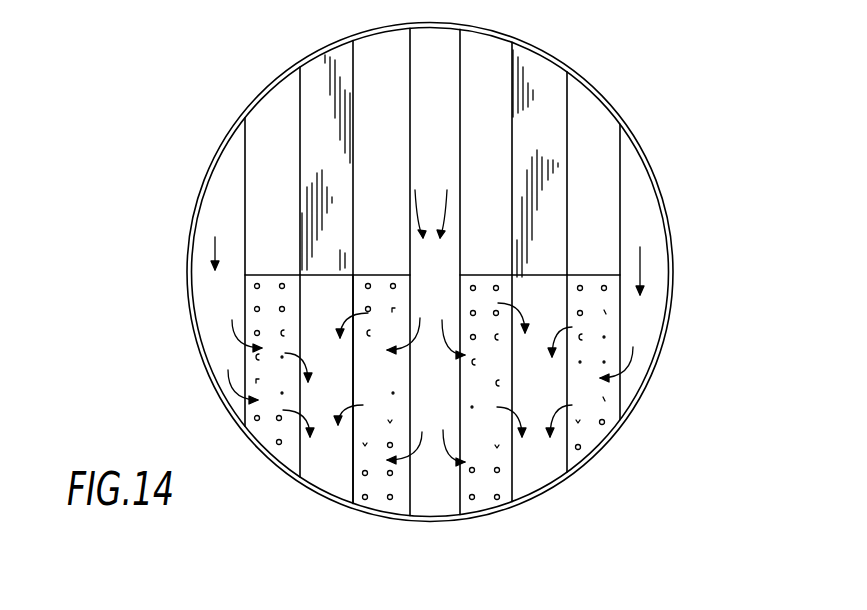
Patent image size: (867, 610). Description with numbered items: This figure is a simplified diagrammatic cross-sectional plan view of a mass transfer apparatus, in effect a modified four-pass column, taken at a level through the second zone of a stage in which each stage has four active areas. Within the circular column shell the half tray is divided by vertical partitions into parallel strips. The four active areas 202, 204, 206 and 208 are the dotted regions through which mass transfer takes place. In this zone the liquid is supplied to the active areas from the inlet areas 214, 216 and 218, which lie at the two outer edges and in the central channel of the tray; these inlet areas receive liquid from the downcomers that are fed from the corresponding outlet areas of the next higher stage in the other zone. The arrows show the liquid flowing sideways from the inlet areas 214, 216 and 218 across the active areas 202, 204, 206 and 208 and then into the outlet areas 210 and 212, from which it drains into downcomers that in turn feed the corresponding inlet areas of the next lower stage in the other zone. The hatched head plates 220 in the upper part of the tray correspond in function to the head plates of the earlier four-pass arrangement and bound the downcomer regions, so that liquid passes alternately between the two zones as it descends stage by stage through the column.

The active area 202 is at (273, 457).
The active area 204 is at (378, 502).
The active area 206 is at (519, 527).
The active area 208 is at (663, 450).
The inlet area 210 is at (325, 487).
The inlet area 212 is at (604, 493).
The outlet area 214 is at (223, 382).
The outlet area 216 is at (437, 500).
The outlet area 218 is at (709, 378).
The head plate 220 is at (327, 10).